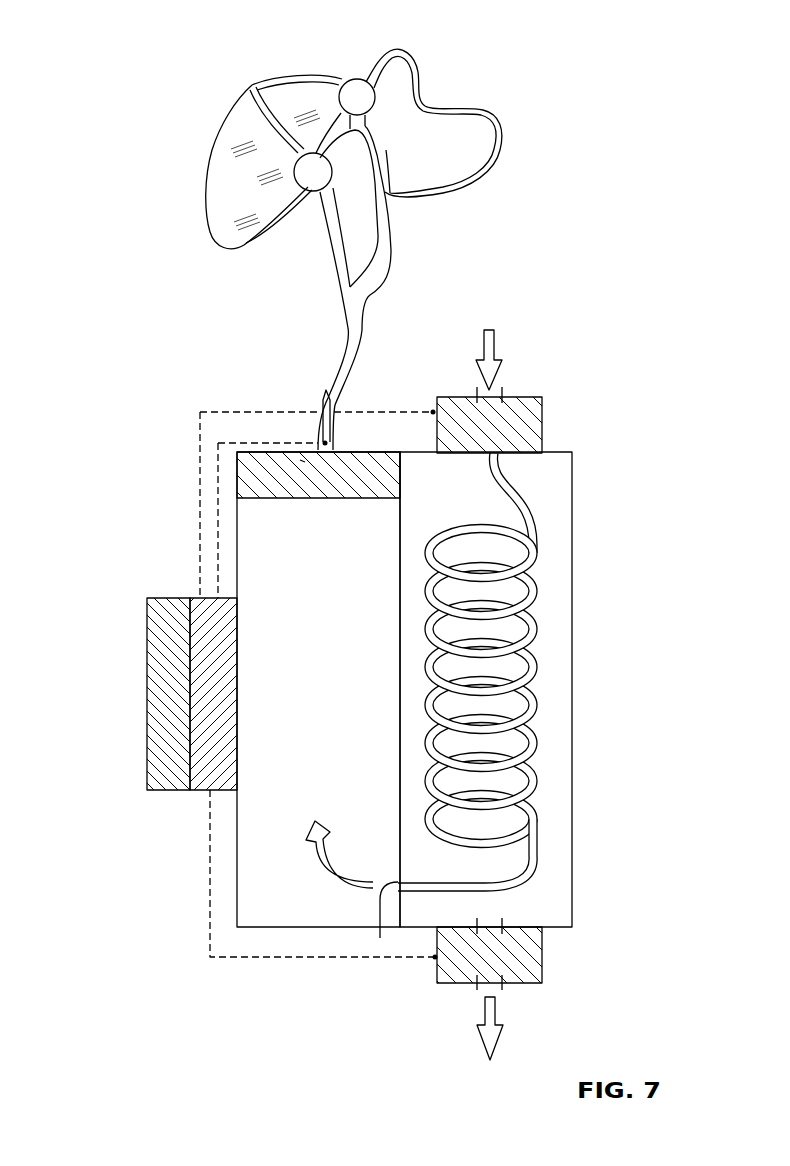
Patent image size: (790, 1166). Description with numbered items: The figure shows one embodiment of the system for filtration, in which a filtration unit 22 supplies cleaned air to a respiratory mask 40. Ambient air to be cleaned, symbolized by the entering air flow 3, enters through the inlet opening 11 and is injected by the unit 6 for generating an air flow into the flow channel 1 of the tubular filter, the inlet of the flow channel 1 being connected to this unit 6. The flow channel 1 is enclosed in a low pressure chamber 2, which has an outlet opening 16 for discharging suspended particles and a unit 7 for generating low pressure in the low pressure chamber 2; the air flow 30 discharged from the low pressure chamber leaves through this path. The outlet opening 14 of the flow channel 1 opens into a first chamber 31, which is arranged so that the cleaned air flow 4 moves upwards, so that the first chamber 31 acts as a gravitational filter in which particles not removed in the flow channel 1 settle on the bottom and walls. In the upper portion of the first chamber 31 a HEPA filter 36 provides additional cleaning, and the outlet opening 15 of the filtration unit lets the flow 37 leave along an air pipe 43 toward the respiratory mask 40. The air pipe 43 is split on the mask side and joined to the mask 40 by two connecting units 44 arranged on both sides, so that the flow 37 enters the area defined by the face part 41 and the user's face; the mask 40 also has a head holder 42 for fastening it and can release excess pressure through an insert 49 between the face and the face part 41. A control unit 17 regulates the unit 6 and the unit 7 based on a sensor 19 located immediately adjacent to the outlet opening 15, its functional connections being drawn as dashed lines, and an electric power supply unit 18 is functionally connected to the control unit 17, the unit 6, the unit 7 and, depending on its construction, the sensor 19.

The flow channel 1 is at (537, 575).
The low pressure chamber 2 is at (555, 672).
The entering air flow 3 is at (489, 344).
The cleaned air flow 4 is at (337, 878).
The unit for generating an air flow 6 is at (523, 420).
The unit for generating low pressure 7 is at (518, 957).
The inlet opening 11 is at (497, 390).
The outlet opening of the flow channel 14 is at (380, 938).
The outlet opening of the filtration unit 15 is at (327, 450).
The outlet opening of the low pressure chamber 16 is at (490, 922).
The control unit 17 is at (200, 747).
The electric power supply unit 18 is at (160, 668).
The sensor 19 is at (327, 443).
The filtration unit 22 is at (172, 470).
The discharged air flow 30 is at (490, 1046).
The first chamber 31 is at (325, 687).
The HEPA filter 36 is at (262, 467).
The flow to be discharged 37 is at (318, 405).
The respiratory mask 40 is at (313, 230).
The face part 41 is at (224, 182).
The head holder 42 is at (480, 113).
The air pipe 43 is at (354, 304).
The connecting units 44 is at (313, 173).
The insert 49 is at (252, 84).